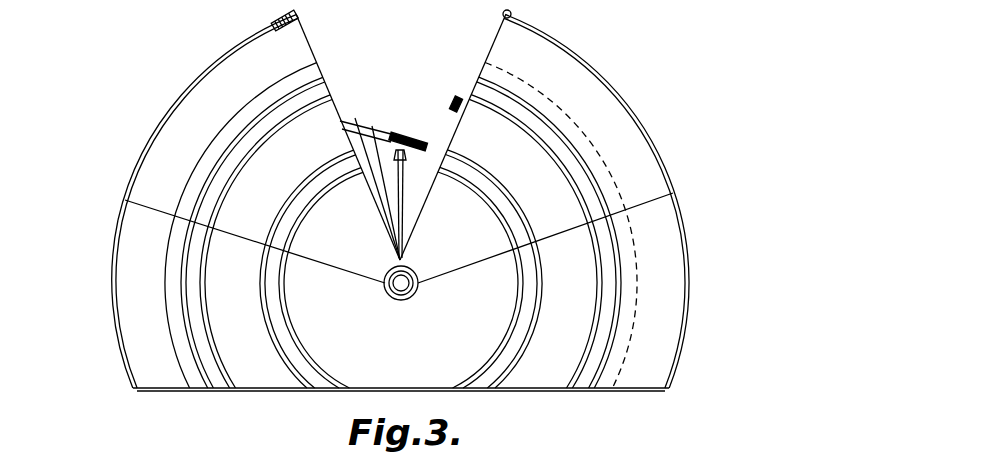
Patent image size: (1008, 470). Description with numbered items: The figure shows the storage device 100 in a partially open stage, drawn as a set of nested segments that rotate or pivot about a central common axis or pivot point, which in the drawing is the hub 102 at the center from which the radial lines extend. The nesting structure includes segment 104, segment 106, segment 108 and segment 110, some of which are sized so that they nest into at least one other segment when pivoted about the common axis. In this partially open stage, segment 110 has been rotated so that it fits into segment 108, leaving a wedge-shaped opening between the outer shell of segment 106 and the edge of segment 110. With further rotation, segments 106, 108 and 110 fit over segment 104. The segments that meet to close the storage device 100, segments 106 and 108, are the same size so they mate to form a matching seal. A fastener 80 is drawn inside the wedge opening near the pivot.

The storage device 100 is at (106, 140).
The central hub 102 is at (403, 287).
The segment 104 is at (135, 327).
The segment 106 is at (215, 87).
The segment 108 is at (582, 77).
The segment 110 is at (473, 65).
The fastener bolt 80 is at (377, 129).